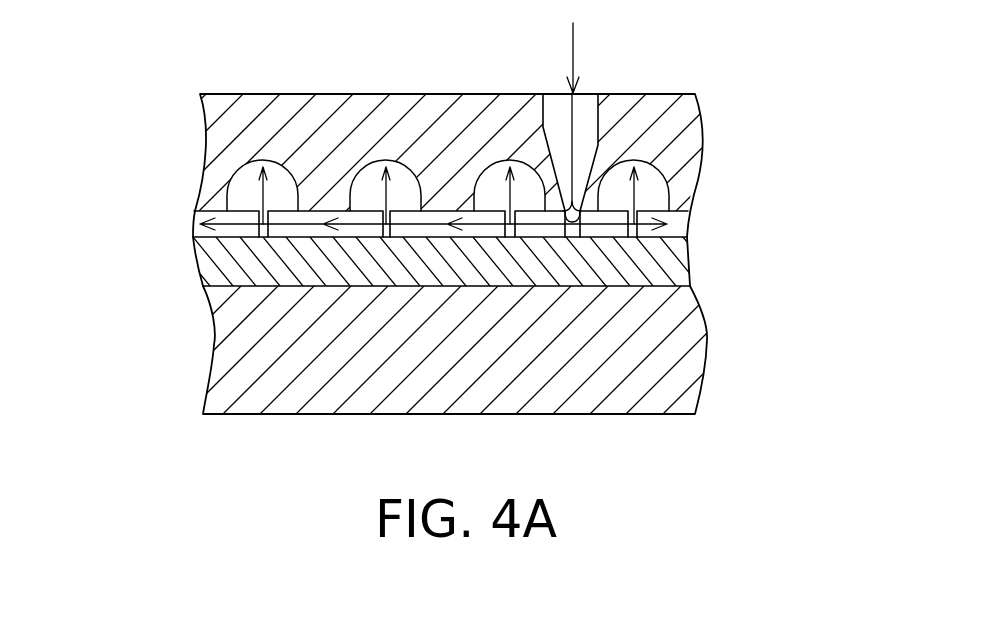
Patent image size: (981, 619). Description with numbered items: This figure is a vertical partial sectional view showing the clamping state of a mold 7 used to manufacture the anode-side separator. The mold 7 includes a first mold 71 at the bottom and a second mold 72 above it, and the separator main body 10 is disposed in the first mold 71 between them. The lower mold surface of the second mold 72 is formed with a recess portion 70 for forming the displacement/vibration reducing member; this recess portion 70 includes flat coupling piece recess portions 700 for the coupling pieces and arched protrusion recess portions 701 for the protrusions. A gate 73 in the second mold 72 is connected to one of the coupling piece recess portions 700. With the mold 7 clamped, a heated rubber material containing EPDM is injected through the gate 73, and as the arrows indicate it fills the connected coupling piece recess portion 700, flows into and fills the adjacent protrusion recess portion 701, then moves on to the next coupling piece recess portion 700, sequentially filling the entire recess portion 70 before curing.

The mold 7 is at (740, 61).
The second mold 72 is at (693, 128).
The gate 73 is at (583, 207).
The separator main body 10 is at (673, 265).
The first mold 71 is at (694, 350).
The recess portion 70 is at (371, 221).
The coupling piece recess portion 700 is at (308, 213).
The protrusion recess portion 701 is at (246, 177).